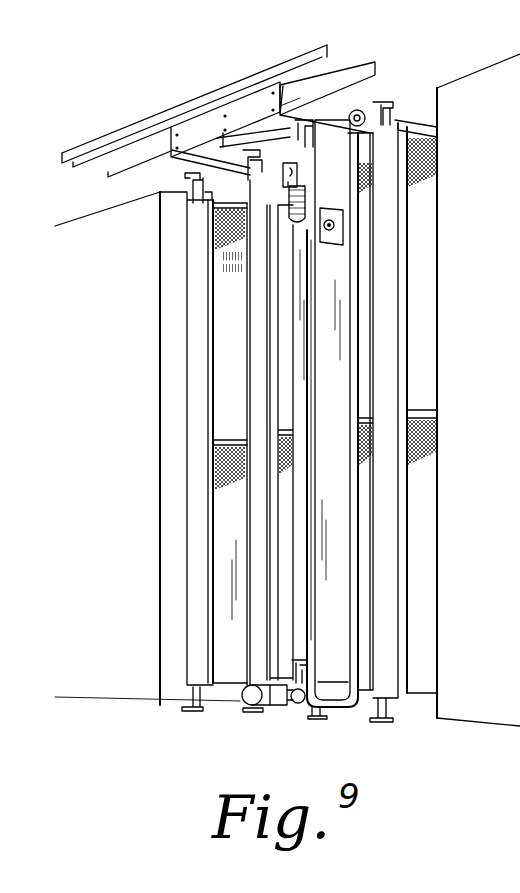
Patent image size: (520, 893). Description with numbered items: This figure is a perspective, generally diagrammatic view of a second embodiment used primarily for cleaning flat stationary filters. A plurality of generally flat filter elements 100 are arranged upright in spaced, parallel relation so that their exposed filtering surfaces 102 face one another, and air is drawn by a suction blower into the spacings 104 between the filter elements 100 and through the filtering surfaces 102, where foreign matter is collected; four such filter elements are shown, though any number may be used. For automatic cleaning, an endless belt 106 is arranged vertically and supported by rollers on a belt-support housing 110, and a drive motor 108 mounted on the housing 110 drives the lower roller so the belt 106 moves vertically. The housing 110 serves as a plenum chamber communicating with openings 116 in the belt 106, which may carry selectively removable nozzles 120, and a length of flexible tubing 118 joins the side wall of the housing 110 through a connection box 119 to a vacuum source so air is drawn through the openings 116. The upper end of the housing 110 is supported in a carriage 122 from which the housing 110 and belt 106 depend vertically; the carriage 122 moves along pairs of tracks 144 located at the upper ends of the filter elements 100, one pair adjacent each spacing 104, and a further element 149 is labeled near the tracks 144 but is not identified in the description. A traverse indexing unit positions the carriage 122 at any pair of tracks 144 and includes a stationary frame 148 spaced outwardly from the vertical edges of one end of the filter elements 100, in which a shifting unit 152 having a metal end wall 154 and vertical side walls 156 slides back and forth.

The filter elements 100 is at (202, 690).
The exposed filtering surfaces 102 is at (223, 412).
The spacings 104 is at (210, 195).
The endless belt 106 is at (337, 563).
The drive motor 108 is at (256, 700).
The belt-support housing 110 is at (307, 538).
The openings 116 is at (342, 223).
The flexible tubing 118 is at (303, 206).
The connection box 119 is at (303, 178).
The removable nozzles 120 is at (342, 238).
The carriage 122 is at (357, 108).
The tracks 144 is at (228, 198).
The stationary frame 148 is at (288, 58).
The hanger 149 is at (395, 100).
The shifting unit 152 is at (204, 118).
The metal end wall 154 is at (182, 148).
The vertical side walls 156 is at (376, 63).